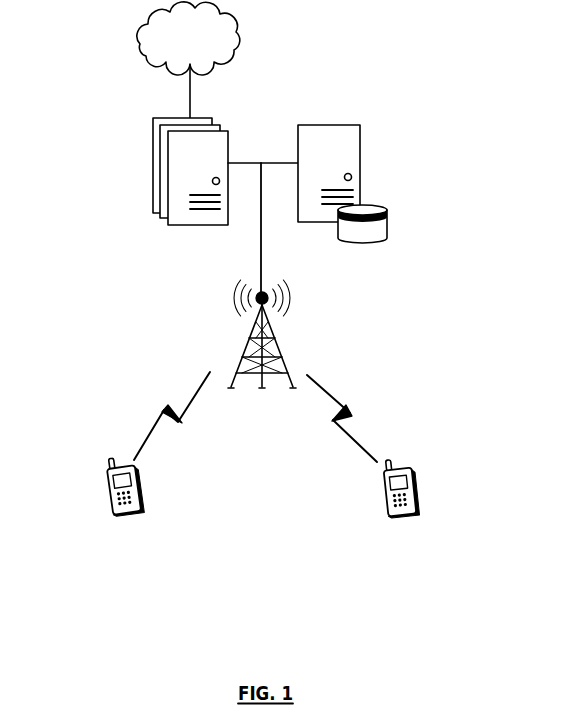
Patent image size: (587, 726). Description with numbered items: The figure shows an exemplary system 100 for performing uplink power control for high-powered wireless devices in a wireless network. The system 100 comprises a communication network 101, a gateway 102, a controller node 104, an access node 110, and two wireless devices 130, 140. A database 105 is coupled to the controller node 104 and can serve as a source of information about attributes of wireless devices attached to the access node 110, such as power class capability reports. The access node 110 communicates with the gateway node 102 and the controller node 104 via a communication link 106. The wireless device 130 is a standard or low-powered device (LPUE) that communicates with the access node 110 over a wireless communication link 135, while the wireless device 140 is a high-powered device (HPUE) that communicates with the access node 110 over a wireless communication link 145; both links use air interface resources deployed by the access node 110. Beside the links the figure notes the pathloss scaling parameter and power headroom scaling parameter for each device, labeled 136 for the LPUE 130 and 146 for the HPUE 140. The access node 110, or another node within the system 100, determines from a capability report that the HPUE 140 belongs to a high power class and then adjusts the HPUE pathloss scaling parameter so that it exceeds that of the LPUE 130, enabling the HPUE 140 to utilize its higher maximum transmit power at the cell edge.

The system 100 is at (293, 61).
The communication network 101 is at (176, 43).
The gateway node 102 is at (153, 118).
The controller node 104 is at (360, 125).
The database 105 is at (385, 208).
The communication link 106 is at (261, 240).
The access node 110 is at (245, 355).
The wireless device (LPUE) 130 is at (108, 472).
The wireless communication link 135 is at (162, 412).
The LPUE path loss and power headroom parameters 136 is at (185, 494).
The wireless device (HPUE) 140 is at (412, 476).
The wireless communication link 145 is at (348, 413).
The HPUE path loss and power headroom parameters 146 is at (339, 494).